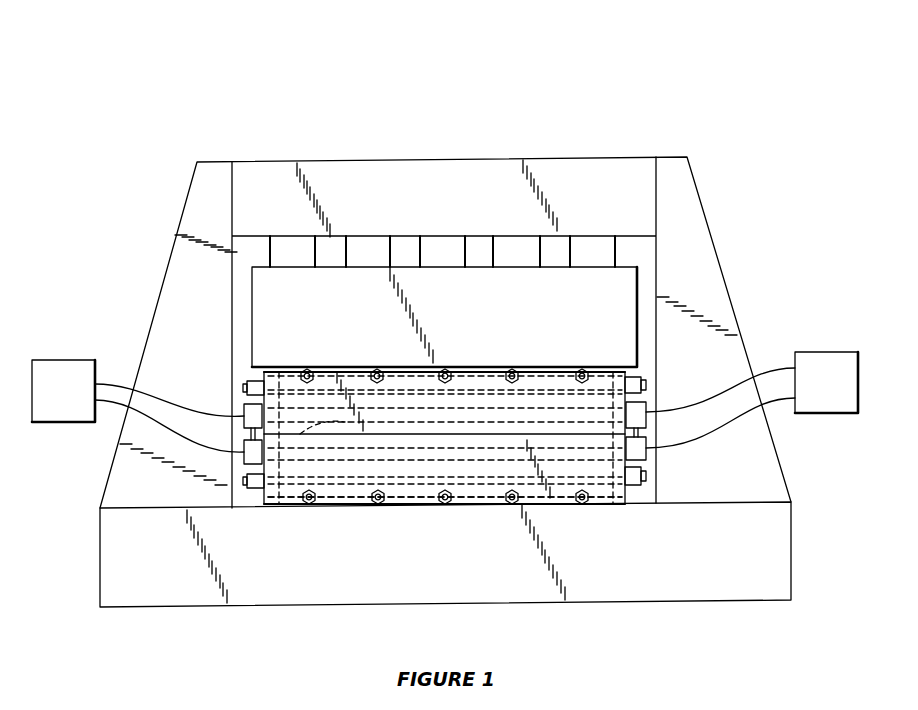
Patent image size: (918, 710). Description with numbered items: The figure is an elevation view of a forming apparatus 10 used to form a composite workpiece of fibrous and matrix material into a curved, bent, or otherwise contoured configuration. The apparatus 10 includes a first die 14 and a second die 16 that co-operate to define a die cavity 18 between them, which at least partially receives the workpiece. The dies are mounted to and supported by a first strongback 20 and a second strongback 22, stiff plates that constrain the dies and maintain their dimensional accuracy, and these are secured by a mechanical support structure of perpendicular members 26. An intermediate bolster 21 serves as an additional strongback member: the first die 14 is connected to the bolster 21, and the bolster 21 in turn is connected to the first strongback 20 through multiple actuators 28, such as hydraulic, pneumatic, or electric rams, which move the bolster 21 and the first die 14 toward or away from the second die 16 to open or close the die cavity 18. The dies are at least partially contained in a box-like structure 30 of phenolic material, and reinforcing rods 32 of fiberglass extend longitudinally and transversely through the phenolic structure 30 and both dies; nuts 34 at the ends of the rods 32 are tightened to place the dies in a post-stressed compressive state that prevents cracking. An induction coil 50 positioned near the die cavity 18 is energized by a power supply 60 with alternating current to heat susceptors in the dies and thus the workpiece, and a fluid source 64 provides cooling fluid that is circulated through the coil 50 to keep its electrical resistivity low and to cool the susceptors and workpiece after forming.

The forming apparatus 10 is at (716, 75).
The first die 14 is at (627, 398).
The second die 16 is at (627, 495).
The die cavity 18 is at (330, 424).
The first strongback 20 is at (286, 160).
The intermediate bolster 21 is at (427, 305).
The second strongback 22 is at (791, 552).
The perpendicular members 26 is at (200, 195).
The actuators 28 is at (583, 240).
The box-like structure 30 is at (282, 497).
The reinforcing rods 32 is at (367, 500).
The nuts 34 is at (258, 492).
The induction coil 50 is at (250, 490).
The power supply 60 is at (835, 352).
The fluid source 64 is at (67, 360).